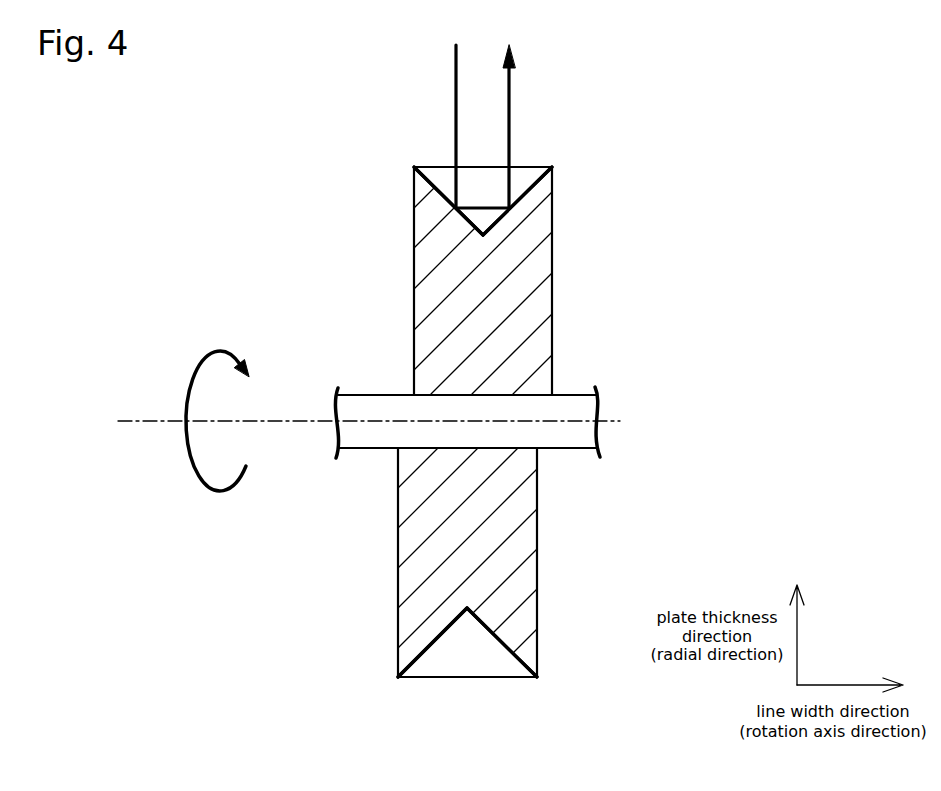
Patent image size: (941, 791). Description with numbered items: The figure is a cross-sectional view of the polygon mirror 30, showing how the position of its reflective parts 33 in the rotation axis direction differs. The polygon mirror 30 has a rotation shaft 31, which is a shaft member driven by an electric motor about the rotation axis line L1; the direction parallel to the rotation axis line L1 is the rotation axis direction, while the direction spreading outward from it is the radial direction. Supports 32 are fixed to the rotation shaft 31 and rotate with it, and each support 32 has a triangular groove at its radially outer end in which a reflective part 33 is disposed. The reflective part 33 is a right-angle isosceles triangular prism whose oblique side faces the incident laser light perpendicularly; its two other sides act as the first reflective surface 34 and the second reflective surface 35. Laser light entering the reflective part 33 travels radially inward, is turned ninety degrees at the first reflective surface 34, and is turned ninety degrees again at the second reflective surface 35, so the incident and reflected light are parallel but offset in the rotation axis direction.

The polygon mirror 30 is at (888, 109).
The rotation shaft 31 is at (573, 403).
The support 32 is at (543, 263).
The reflective part 33 is at (483, 220).
The first reflective surface 34 is at (441, 165).
The second reflective surface 35 is at (532, 177).
The rotation axis line L1 is at (150, 422).